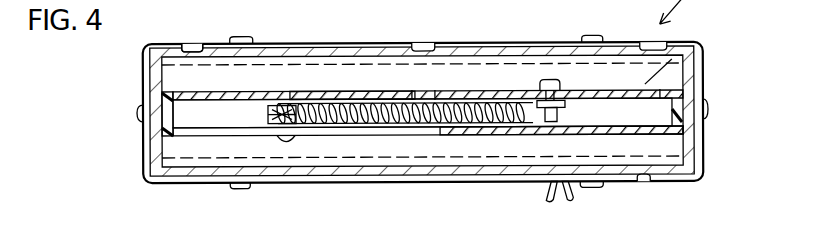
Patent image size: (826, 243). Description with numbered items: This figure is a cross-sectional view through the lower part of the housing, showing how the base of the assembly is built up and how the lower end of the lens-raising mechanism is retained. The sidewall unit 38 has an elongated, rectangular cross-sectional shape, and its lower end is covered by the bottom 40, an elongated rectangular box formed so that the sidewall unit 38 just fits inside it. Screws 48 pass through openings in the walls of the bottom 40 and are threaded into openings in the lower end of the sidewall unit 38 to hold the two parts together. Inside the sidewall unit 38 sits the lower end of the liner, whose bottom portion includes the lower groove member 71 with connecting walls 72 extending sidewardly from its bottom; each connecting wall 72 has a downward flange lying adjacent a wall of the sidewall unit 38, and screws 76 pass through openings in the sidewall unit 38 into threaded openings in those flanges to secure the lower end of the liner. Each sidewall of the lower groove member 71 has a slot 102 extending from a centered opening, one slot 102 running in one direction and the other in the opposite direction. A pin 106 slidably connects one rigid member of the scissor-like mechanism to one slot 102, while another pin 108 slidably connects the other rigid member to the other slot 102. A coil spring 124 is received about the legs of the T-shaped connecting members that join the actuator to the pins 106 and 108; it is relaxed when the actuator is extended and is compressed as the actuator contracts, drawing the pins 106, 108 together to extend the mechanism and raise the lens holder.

The bottom 40 is at (143, 62).
The slot 102 is at (193, 137).
The screws 48 is at (138, 122).
The screws 76 is at (192, 43).
The sidewall unit 38 is at (372, 82).
The lower groove member 71 is at (208, 92).
The coil spring 124 is at (372, 92).
The connecting walls 72 is at (428, 145).
The pin 106 is at (290, 97).
The pin 108 is at (547, 80).